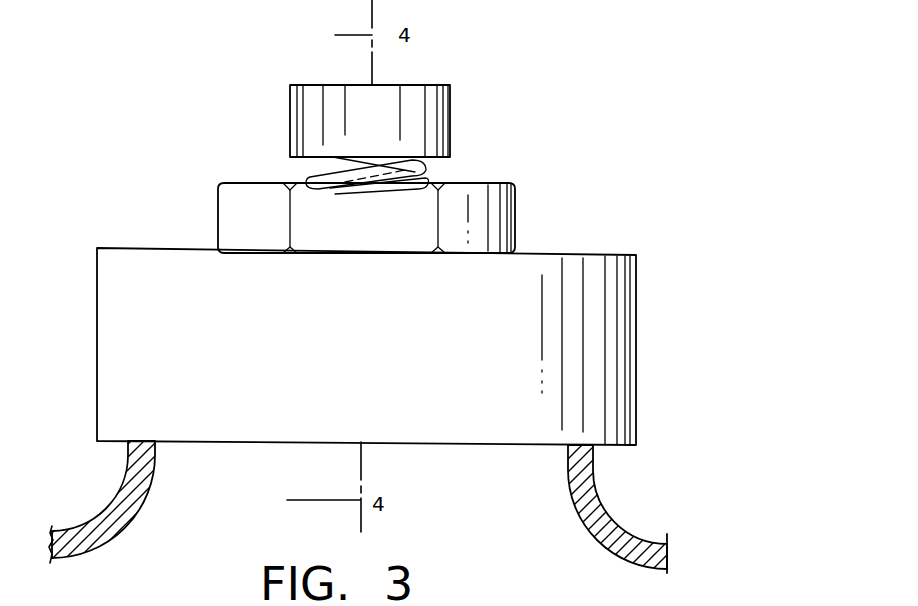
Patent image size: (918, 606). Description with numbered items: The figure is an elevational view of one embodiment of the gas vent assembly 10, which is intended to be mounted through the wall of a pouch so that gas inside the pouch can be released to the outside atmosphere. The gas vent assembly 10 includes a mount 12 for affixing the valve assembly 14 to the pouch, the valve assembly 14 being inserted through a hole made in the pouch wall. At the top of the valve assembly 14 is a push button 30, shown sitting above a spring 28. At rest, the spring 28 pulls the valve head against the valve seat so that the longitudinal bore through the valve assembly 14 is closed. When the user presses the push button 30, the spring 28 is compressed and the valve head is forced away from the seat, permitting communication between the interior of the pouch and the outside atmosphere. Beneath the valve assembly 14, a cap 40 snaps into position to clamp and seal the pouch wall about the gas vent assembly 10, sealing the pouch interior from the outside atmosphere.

The gas vent assembly 10 is at (432, 389).
The mount 12 is at (428, 325).
The valve assembly 14 is at (460, 151).
The spring 28 is at (420, 172).
The push button 30 is at (440, 85).
The cap 40 is at (577, 285).